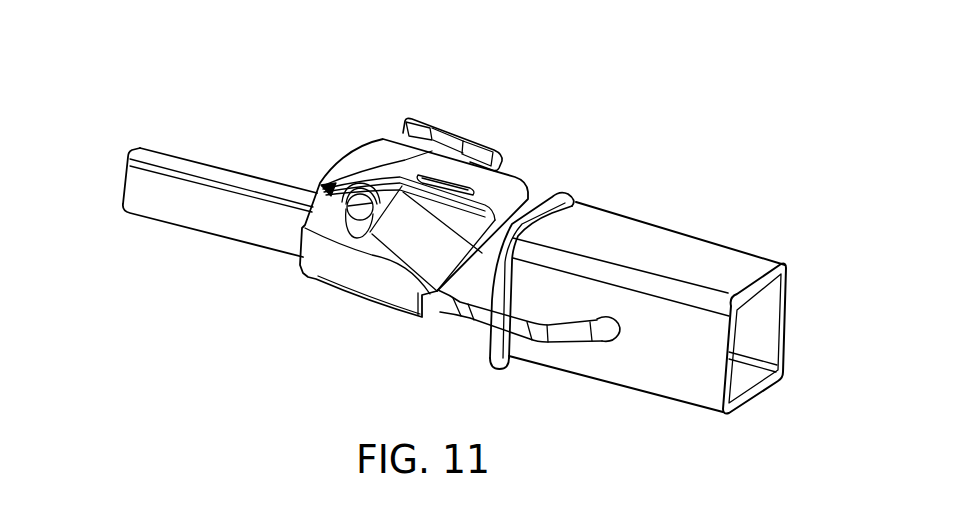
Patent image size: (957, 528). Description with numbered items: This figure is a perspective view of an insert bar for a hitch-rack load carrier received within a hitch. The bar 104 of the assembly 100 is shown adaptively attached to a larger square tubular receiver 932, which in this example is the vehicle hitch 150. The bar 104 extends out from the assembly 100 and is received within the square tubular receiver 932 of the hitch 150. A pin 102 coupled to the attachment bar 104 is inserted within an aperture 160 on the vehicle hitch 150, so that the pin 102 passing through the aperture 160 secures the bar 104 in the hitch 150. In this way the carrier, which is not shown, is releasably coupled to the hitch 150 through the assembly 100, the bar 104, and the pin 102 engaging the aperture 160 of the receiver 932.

The assembly 100 is at (607, 83).
The pin 102 is at (484, 326).
The bar 104 is at (260, 181).
The vehicle hitch 150 is at (676, 242).
The aperture 160 is at (602, 345).
The square tubular receiver 932 is at (590, 212).